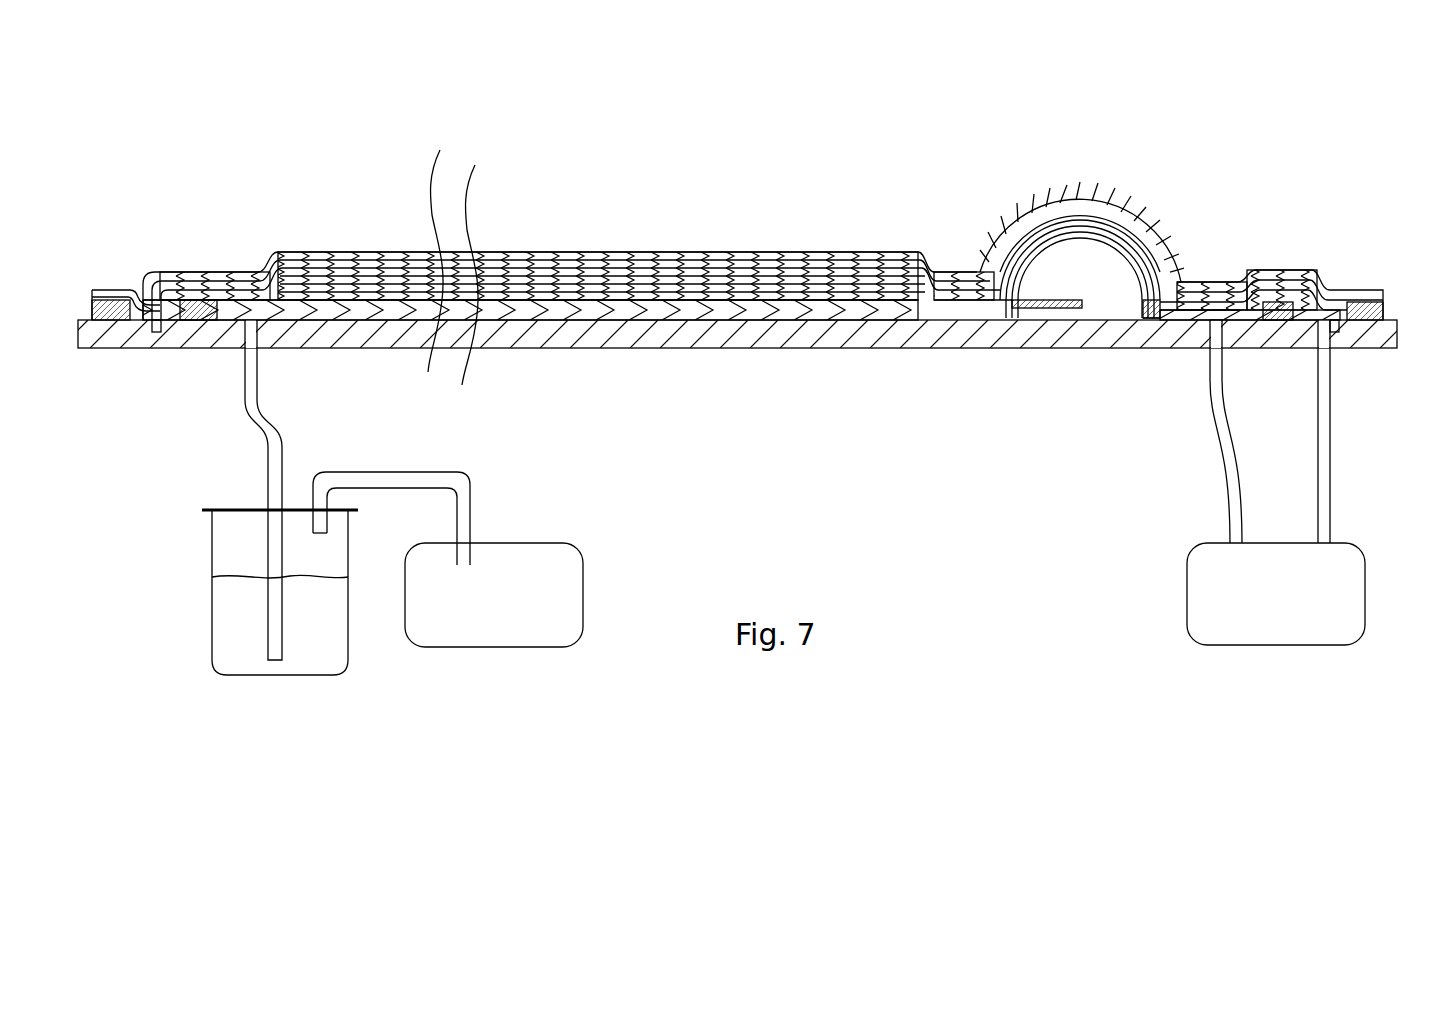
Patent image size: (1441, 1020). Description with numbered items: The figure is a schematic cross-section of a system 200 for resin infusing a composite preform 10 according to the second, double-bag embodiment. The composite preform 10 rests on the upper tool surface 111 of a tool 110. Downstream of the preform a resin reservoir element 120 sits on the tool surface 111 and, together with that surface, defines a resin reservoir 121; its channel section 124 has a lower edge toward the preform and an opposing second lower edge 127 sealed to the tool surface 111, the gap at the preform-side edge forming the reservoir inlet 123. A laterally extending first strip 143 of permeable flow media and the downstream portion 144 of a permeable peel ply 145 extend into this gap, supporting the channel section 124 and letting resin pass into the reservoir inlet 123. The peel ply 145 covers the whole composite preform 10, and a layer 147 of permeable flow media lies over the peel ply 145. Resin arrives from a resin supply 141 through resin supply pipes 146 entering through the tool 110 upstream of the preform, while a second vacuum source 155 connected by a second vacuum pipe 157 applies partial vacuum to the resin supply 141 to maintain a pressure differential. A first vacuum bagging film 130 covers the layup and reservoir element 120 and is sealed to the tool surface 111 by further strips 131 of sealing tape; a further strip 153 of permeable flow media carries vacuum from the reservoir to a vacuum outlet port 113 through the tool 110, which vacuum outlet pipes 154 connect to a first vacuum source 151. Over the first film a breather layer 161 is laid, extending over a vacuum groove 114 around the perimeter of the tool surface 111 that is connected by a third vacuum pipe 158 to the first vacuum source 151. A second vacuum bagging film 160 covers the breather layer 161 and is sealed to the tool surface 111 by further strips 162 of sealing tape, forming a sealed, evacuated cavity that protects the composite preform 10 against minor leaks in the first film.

The system 200 is at (384, 207).
The composite preform 10 is at (812, 312).
The tool 110 is at (540, 336).
The upper tool surface 111 is at (1388, 325).
The vacuum outlet port 113 is at (1230, 347).
The vacuum groove 114 is at (163, 332).
The resin reservoir element 120 is at (1134, 253).
The resin reservoir 121 is at (1097, 300).
The reservoir inlet 123 is at (1018, 294).
The channel section 124 is at (1130, 205).
The second lower edge 127 is at (1148, 320).
The vacuum bagging film 130 is at (782, 270).
The further strips of sealing tape 131 is at (205, 320).
The resin supply 141 is at (228, 620).
The first strip of permeable flow media 143 is at (1040, 308).
The downstream portion of peel ply 144 is at (937, 322).
The peel ply 145 is at (700, 306).
The resin supply pipes 146 is at (266, 450).
The layer of permeable flow media 147 is at (832, 285).
The first vacuum source 151 is at (1276, 594).
The further strip of permeable flow media 153 is at (1225, 300).
The vacuum outlet pipes 154 is at (1216, 493).
The second vacuum source 155 is at (494, 595).
The second vacuum pipe 157 is at (395, 478).
The third vacuum pipe 158 is at (1332, 493).
The second vacuum bagging film 160 is at (565, 252).
The breather layer 161 is at (700, 262).
The further strips of sealing tape 162 is at (108, 322).